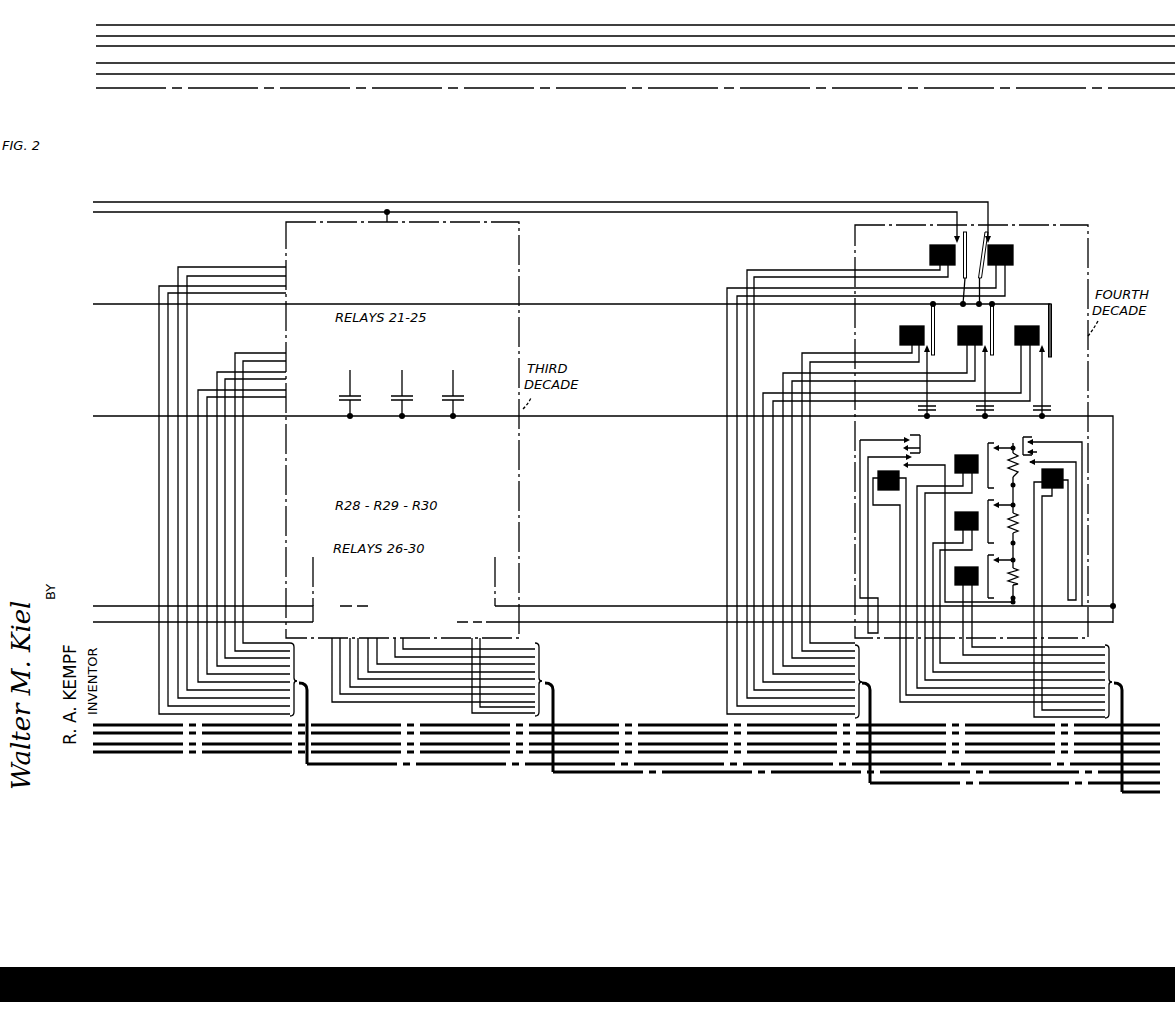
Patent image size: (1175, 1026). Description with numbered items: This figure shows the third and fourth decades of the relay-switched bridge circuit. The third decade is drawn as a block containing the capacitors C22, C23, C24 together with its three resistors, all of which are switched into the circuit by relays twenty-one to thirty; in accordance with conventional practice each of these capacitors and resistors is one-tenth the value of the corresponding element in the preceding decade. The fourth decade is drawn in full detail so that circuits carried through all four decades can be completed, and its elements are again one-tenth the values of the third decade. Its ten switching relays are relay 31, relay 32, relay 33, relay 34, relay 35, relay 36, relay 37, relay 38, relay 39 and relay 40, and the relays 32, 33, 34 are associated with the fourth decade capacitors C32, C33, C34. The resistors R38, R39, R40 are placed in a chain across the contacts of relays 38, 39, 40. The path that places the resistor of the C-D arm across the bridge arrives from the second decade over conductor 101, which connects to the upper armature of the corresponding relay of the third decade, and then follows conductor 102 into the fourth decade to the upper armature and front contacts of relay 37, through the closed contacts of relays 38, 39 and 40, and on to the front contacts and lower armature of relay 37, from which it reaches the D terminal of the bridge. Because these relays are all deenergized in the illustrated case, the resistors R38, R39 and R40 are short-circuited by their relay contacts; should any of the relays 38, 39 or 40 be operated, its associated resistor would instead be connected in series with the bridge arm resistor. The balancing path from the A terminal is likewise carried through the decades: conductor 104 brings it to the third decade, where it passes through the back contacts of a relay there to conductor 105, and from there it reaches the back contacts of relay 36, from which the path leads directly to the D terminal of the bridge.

The relay 31 is at (857, 465).
The relay 32 is at (869, 476).
The relay 33 is at (889, 483).
The relay 34 is at (907, 493).
The relay 35 is at (870, 473).
The relay 36 is at (982, 568).
The relay 37 is at (1064, 577).
The relay 38 is at (1030, 605).
The relay 39 is at (1019, 586).
The relay 40 is at (1011, 565).
The conductor 101 is at (138, 606).
The conductor 102 is at (606, 606).
The conductor 104 is at (142, 612).
The conductor 105 is at (603, 622).
The capacitor C22 is at (338, 394).
The capacitor C23 is at (390, 394).
The capacitor C24 is at (441, 394).
The capacitor C32 is at (911, 410).
The capacitor C33 is at (969, 410).
The capacitor C34 is at (1027, 410).
The resistor R38 is at (1015, 578).
The resistor R39 is at (1015, 528).
The resistor R40 is at (1015, 470).